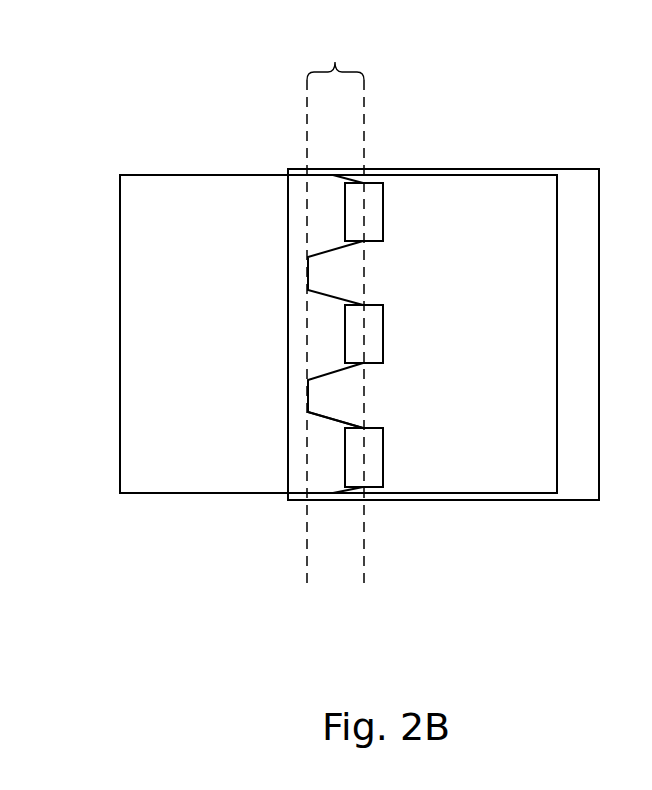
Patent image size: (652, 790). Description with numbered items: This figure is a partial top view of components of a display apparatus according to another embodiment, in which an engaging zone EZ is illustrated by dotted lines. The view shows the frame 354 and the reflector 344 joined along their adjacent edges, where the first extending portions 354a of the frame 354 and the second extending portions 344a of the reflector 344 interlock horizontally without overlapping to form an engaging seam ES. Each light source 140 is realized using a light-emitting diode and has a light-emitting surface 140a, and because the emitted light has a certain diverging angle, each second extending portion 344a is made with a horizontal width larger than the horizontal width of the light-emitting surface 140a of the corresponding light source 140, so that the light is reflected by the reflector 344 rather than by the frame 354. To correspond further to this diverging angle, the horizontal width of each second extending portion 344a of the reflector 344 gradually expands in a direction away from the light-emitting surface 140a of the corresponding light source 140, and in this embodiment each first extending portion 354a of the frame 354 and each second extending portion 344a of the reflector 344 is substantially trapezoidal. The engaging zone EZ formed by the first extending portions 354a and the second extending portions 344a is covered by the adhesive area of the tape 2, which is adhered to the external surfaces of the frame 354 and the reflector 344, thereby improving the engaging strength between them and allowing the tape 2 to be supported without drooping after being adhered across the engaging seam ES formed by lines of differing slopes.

The tape 2 is at (577, 190).
The reflector 344 is at (187, 315).
The frame 354 is at (512, 190).
The engaging seam ES is at (307, 272).
The first extending portion 354a is at (322, 396).
The second extending portion 344a is at (322, 452).
The light source 140 is at (377, 470).
The light-emitting surface 140a is at (345, 467).
The engaging zone EZ is at (335, 308).